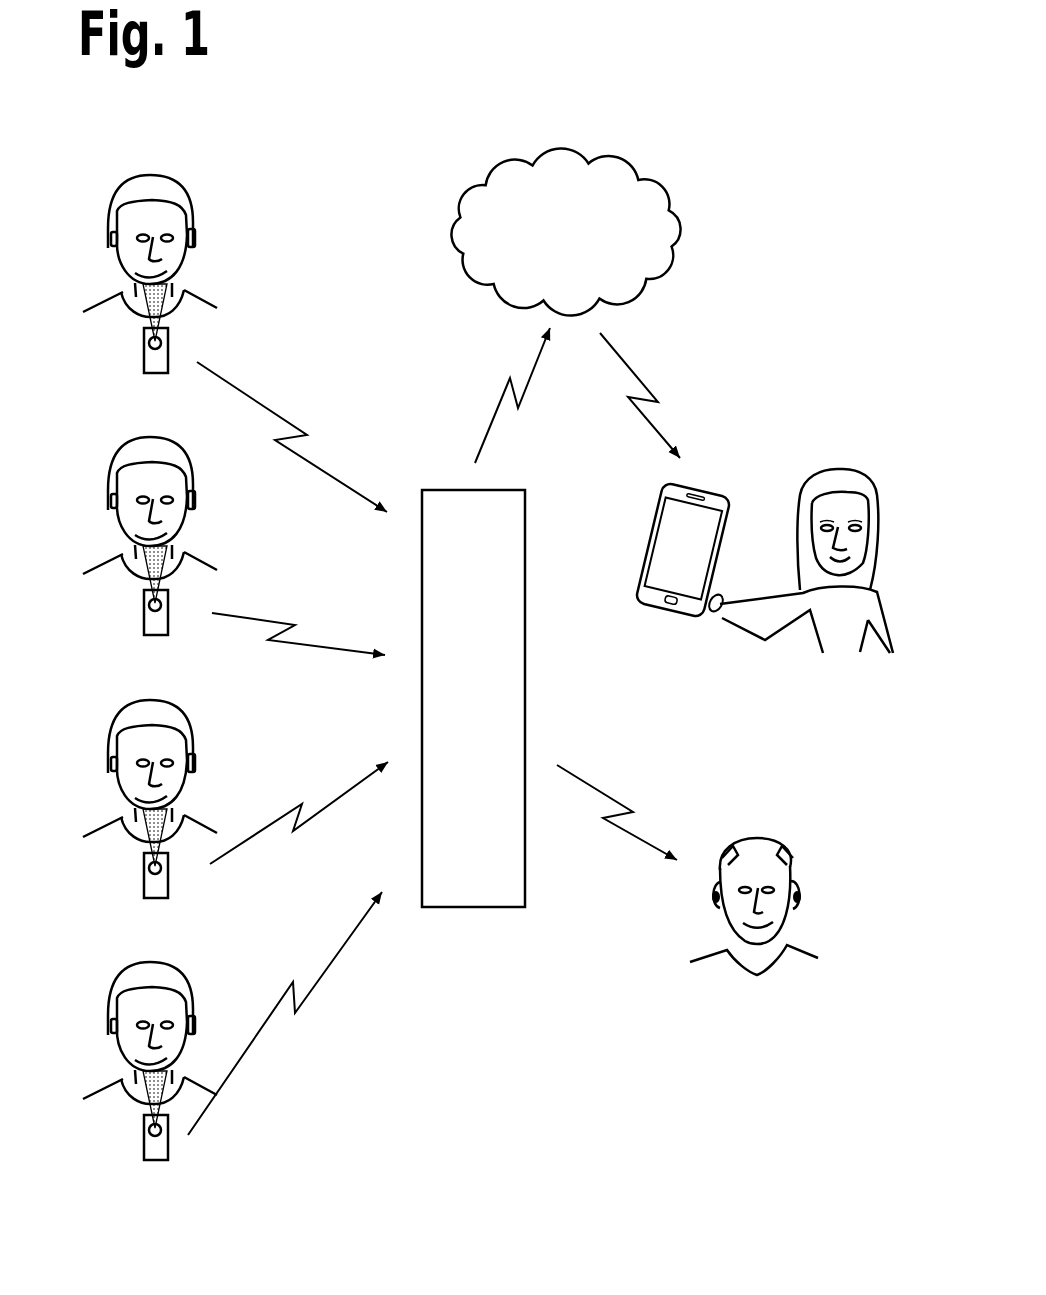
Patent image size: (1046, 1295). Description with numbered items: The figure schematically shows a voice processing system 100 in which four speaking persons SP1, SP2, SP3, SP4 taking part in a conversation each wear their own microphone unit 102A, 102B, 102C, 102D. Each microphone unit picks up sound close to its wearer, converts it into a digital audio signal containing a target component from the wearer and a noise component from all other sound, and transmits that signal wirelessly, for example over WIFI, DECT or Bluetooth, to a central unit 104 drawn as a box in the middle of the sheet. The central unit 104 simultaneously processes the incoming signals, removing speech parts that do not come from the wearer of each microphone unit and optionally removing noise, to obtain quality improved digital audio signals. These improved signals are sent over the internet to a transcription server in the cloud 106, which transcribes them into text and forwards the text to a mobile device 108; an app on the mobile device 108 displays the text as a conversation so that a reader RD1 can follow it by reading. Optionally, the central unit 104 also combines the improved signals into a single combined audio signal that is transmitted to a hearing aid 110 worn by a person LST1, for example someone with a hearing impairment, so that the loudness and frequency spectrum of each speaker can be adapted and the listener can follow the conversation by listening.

The voice processing system 100 is at (742, 285).
The microphone unit 102A is at (152, 360).
The microphone unit 102B is at (152, 622).
The microphone unit 102C is at (152, 885).
The microphone unit 102D is at (152, 1147).
The central unit 104 is at (472, 868).
The transcription server in the cloud 106 is at (582, 190).
The mobile device 108 is at (697, 530).
The hearing aid 110 is at (713, 902).
The speaking person SP1 is at (212, 205).
The speaking person SP2 is at (210, 502).
The speaking person SP3 is at (230, 769).
The speaking person SP4 is at (212, 993).
The reader RD1 is at (876, 468).
The person with hearing impairment LST1 is at (770, 830).